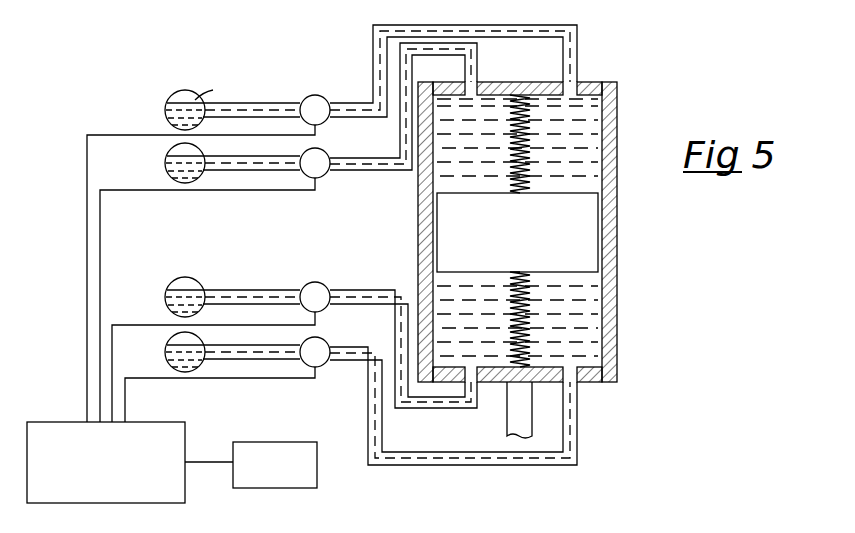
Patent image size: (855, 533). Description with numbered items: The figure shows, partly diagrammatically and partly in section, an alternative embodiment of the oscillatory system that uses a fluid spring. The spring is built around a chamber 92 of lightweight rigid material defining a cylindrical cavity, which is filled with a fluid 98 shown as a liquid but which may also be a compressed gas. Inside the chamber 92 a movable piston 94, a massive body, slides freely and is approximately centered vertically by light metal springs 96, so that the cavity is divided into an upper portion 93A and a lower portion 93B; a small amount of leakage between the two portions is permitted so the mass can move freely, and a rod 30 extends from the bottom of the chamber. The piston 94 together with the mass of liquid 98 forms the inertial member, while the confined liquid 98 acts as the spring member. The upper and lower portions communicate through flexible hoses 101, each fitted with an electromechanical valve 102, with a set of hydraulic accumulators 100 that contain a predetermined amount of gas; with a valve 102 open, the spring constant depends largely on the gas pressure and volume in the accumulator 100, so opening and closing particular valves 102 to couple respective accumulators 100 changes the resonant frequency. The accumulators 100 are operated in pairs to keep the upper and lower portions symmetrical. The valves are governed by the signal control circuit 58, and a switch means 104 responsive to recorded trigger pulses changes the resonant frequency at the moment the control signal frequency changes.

The piston rod 30 is at (532, 418).
The signal control circuit 58 is at (298, 442).
The chamber 92 is at (617, 100).
The upper portion 93A is at (595, 102).
The lower portion 93B is at (600, 322).
The piston 94 is at (583, 236).
The light metal springs 96 is at (530, 105).
The fluid 98 is at (455, 105).
The hydraulic accumulators 100 is at (178, 93).
The flexible hoses 101 is at (350, 103).
The electromechanical valves 102 is at (312, 95).
The switch means 104 is at (165, 422).